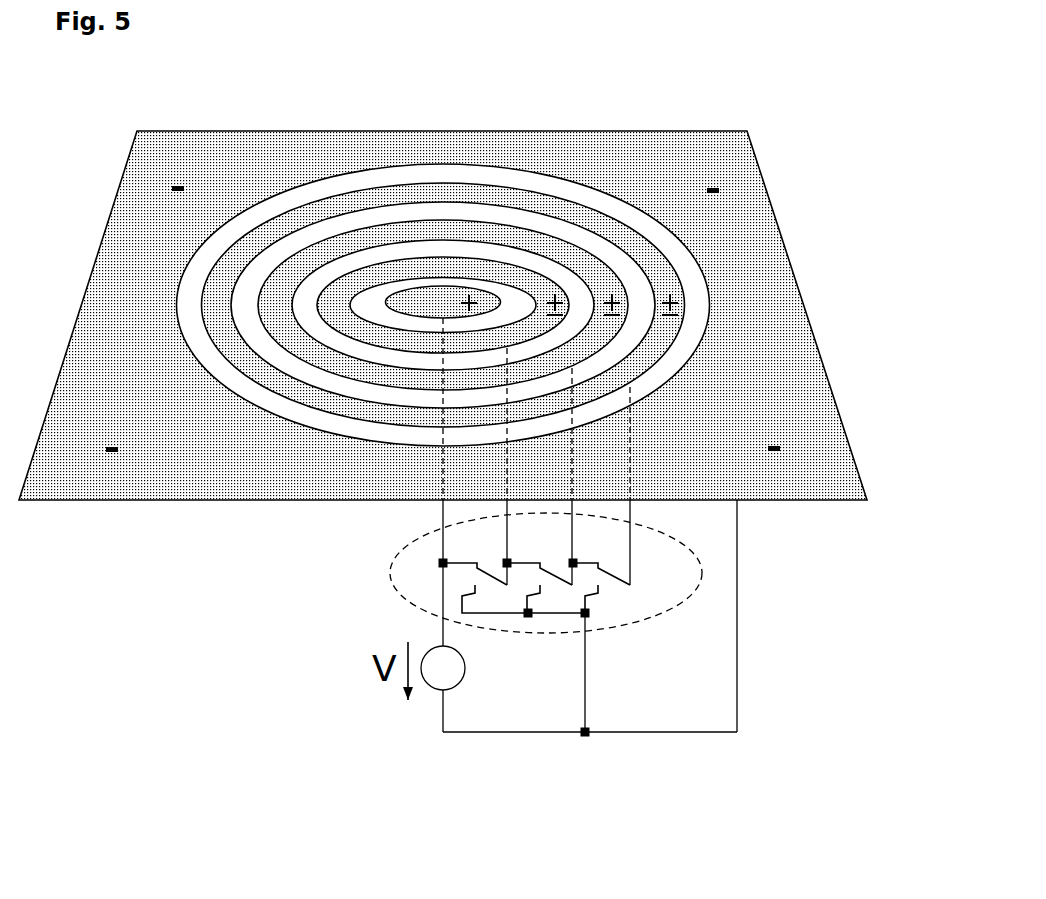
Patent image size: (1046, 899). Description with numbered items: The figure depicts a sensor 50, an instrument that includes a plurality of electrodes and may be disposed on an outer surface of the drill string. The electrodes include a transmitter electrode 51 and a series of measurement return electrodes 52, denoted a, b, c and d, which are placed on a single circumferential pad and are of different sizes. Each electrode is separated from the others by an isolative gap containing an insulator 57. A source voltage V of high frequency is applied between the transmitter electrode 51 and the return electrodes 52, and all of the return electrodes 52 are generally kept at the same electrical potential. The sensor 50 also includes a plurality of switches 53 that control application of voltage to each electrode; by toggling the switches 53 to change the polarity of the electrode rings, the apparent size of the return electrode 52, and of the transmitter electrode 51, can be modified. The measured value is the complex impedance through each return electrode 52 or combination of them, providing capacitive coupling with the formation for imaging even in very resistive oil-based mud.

The sensor 50 is at (228, 470).
The transmitter electrode 51 is at (730, 160).
The return electrodes 52 is at (412, 303).
The switches 53 is at (390, 575).
The insulator 57 is at (567, 193).